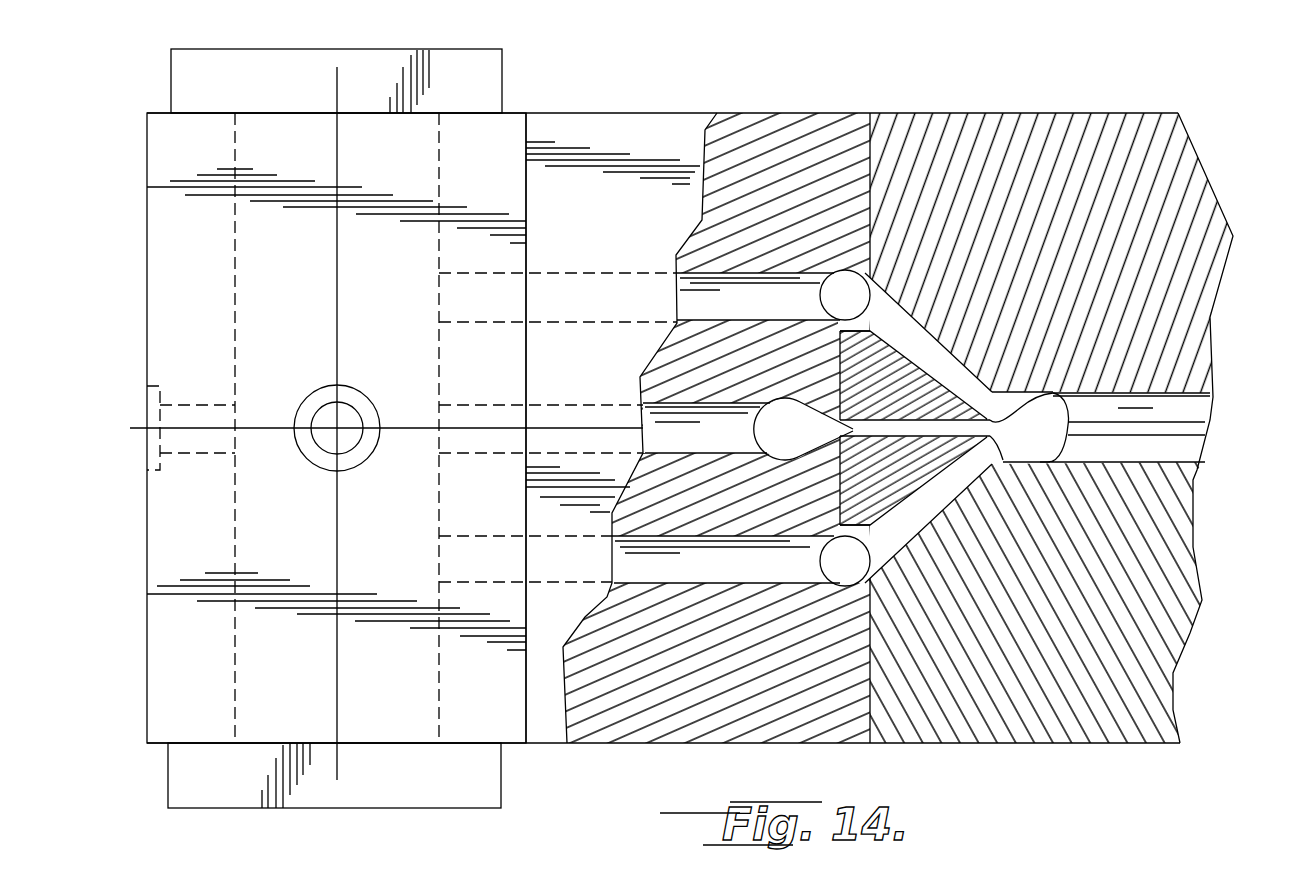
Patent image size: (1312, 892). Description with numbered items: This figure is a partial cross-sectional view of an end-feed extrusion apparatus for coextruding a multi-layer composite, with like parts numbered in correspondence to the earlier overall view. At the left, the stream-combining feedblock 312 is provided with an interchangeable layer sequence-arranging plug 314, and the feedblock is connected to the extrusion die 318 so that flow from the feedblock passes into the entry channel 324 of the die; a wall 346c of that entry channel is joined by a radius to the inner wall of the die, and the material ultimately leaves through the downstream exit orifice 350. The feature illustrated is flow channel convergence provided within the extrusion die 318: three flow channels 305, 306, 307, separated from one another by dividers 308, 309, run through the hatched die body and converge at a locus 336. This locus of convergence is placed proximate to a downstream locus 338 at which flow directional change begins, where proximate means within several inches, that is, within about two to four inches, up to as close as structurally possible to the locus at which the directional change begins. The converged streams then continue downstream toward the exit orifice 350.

The layer sequence-arranging plug 314 is at (493, 63).
The stream-combining feedblock 312 is at (751, 104).
The extrusion die 318 is at (1024, 104).
The flow channel 305 is at (893, 315).
The flow channel 306 is at (850, 428).
The flow channel 307 is at (921, 515).
The divider 308 is at (853, 363).
The divider 309 is at (848, 484).
The entry channel 324 is at (1013, 395).
The locus of convergence 336 is at (1050, 393).
The downstream locus 338 is at (1050, 455).
The wall of entry channel 346c is at (1017, 454).
The exit orifice 350 is at (1200, 427).